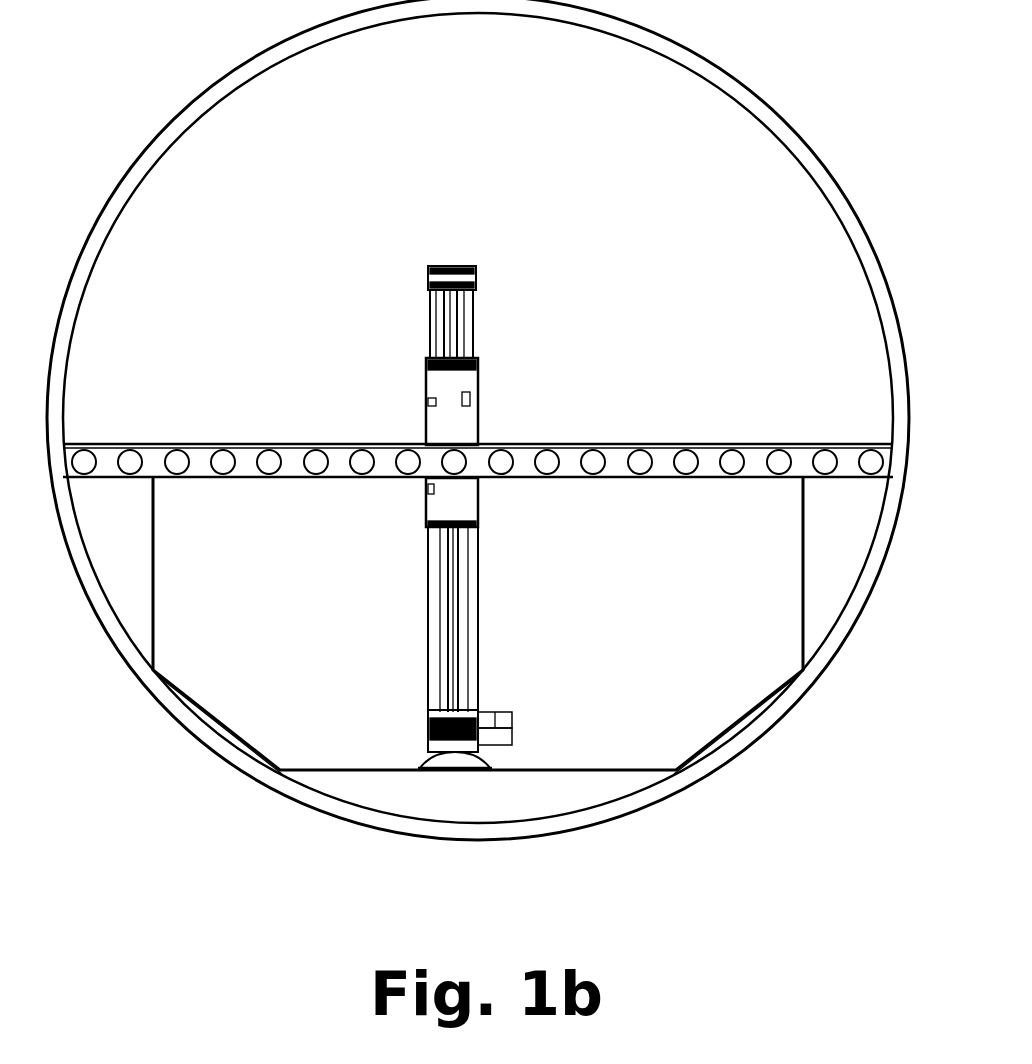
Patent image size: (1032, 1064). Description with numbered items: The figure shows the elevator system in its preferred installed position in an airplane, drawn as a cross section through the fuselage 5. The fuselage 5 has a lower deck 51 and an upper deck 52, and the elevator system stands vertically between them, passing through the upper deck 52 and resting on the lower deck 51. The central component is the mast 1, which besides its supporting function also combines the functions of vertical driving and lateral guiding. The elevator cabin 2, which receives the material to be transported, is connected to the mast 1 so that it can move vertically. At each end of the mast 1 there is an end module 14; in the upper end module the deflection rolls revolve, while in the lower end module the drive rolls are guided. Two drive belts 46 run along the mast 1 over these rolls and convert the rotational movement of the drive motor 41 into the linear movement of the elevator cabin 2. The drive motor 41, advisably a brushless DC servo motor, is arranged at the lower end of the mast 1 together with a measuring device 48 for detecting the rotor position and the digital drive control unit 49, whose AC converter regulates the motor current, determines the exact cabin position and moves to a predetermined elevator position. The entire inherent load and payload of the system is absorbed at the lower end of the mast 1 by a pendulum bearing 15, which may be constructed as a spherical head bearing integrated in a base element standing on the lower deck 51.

The fuselage 5 is at (743, 97).
The upper deck 52 is at (805, 450).
The lower deck 51 is at (588, 772).
The end module 14 is at (428, 268).
The mast 1 is at (478, 320).
The elevator cabin 2 is at (478, 418).
The drive belt 46 is at (445, 580).
The measuring device 48 is at (483, 712).
The drive control unit 49 is at (506, 720).
The drive motor 41 is at (498, 740).
The pendulum bearing 15 is at (437, 755).